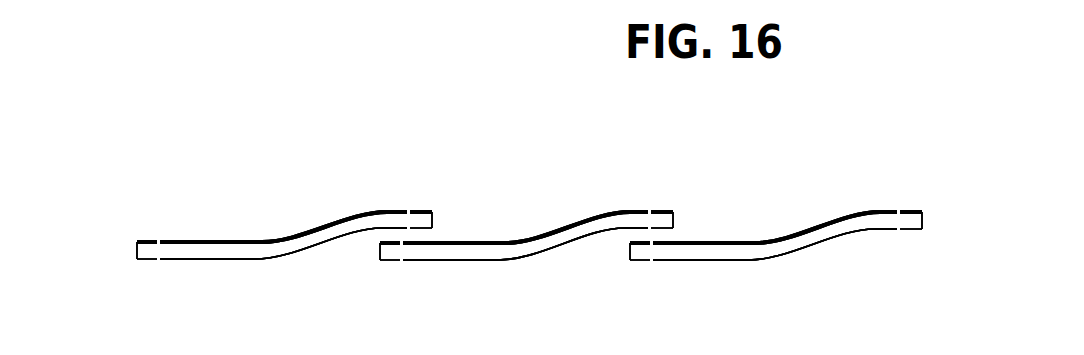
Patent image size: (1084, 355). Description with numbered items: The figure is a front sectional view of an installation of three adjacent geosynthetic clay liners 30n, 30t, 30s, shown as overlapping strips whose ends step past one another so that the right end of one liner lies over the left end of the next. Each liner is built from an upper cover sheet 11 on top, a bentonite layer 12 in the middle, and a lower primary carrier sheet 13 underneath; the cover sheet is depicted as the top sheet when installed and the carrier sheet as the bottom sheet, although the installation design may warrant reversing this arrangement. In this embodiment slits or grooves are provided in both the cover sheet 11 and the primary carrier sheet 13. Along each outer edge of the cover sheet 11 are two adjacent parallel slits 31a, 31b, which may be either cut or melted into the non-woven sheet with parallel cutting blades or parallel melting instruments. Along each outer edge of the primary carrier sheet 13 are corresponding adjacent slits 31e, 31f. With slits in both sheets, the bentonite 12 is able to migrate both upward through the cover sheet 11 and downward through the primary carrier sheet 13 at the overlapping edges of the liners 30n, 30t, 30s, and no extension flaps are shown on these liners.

The geosynthetic clay liner 30n is at (317, 152).
The geosynthetic clay liner 30t is at (542, 147).
The geosynthetic clay liner 30s is at (756, 162).
The upper cover sheet 11 is at (274, 229).
The bentonite layer 12 is at (317, 236).
The lower carrier sheet 13 is at (252, 273).
The slit 31a is at (147, 240).
The slit 31b is at (162, 241).
The slit 31e is at (145, 262).
The slit 31f is at (162, 262).